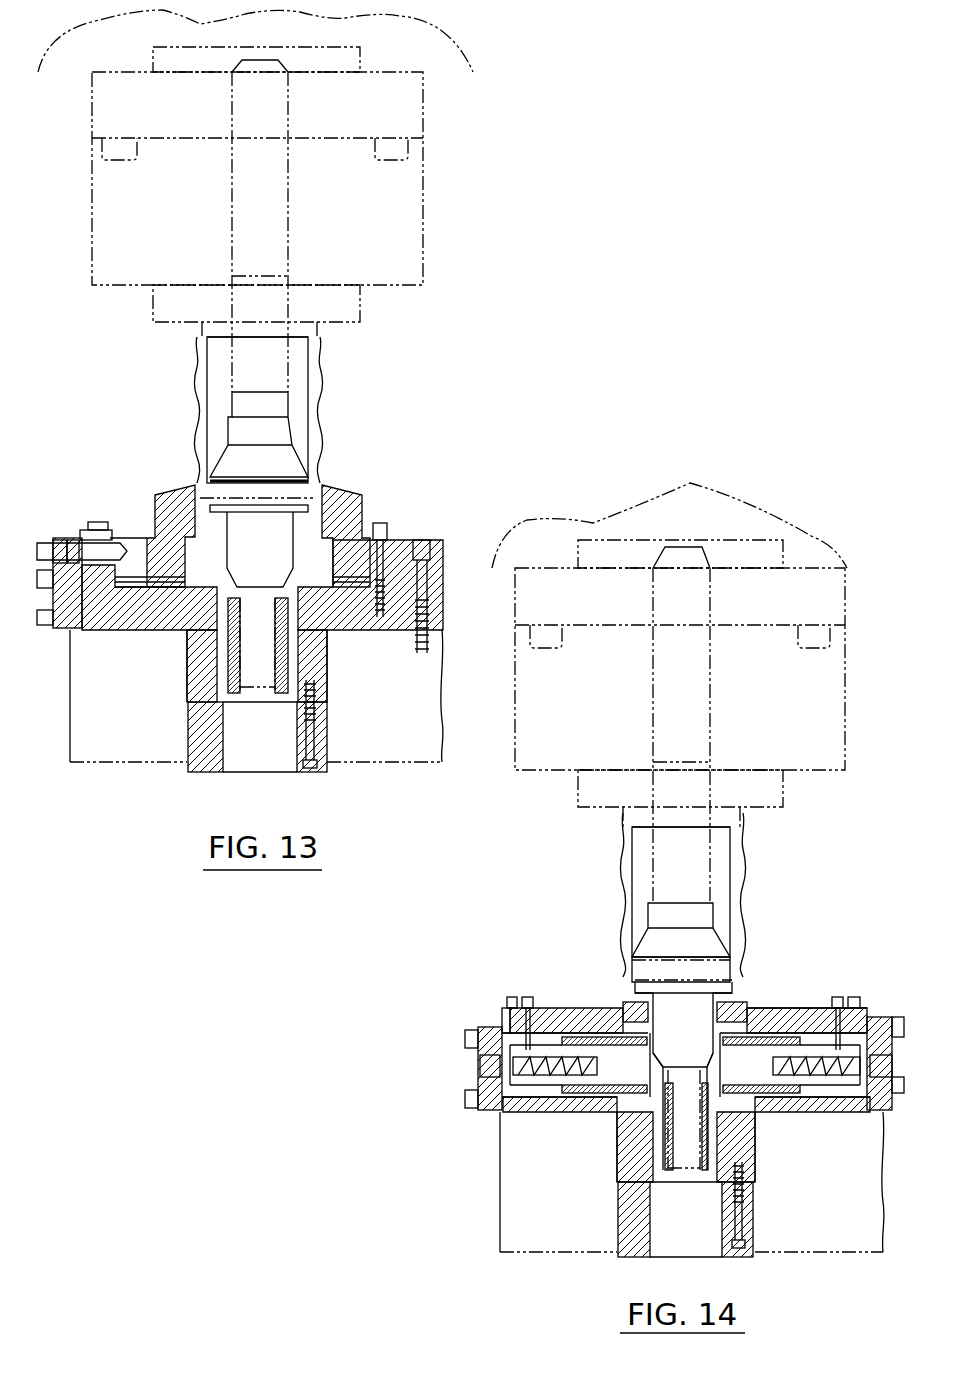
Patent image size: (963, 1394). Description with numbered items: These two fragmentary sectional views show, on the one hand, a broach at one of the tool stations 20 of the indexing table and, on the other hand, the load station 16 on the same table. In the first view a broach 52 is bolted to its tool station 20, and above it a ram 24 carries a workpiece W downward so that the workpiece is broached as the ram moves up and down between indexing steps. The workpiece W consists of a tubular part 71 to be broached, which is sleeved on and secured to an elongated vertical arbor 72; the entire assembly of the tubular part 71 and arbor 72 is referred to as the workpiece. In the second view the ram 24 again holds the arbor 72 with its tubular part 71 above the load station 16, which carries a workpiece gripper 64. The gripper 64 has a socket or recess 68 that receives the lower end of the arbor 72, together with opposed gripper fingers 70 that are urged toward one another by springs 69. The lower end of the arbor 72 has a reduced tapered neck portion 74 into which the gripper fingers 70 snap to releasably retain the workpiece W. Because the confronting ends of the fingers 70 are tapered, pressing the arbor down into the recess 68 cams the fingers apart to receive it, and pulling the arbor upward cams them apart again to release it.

In FIG. 14, the load station 16 is at (477, 1055).
In FIG. 13, the tool stations 20 is at (102, 630).
In FIG. 13, the ram 24 is at (425, 222).
In FIG. 14, the ram 24 is at (847, 712).
In FIG. 13, the broach 52 is at (358, 497).
In FIG. 14, the workpiece gripper 64 is at (783, 1007).
In FIG. 14, the socket or recess 68 is at (663, 1013).
In FIG. 14, the springs 69 is at (548, 1090).
In FIG. 14, the gripper fingers 70 is at (747, 1035).
In FIG. 13, the tubular part 71 is at (317, 402).
In FIG. 14, the tubular part 71 is at (747, 865).
In FIG. 13, the arbor 72 is at (230, 390).
In FIG. 14, the arbor 72 is at (653, 690).
In FIG. 14, the reduced tapered neck portion 74 is at (692, 1063).
In FIG. 13, the workpiece W is at (173, 358).
In FIG. 14, the workpiece W is at (607, 868).